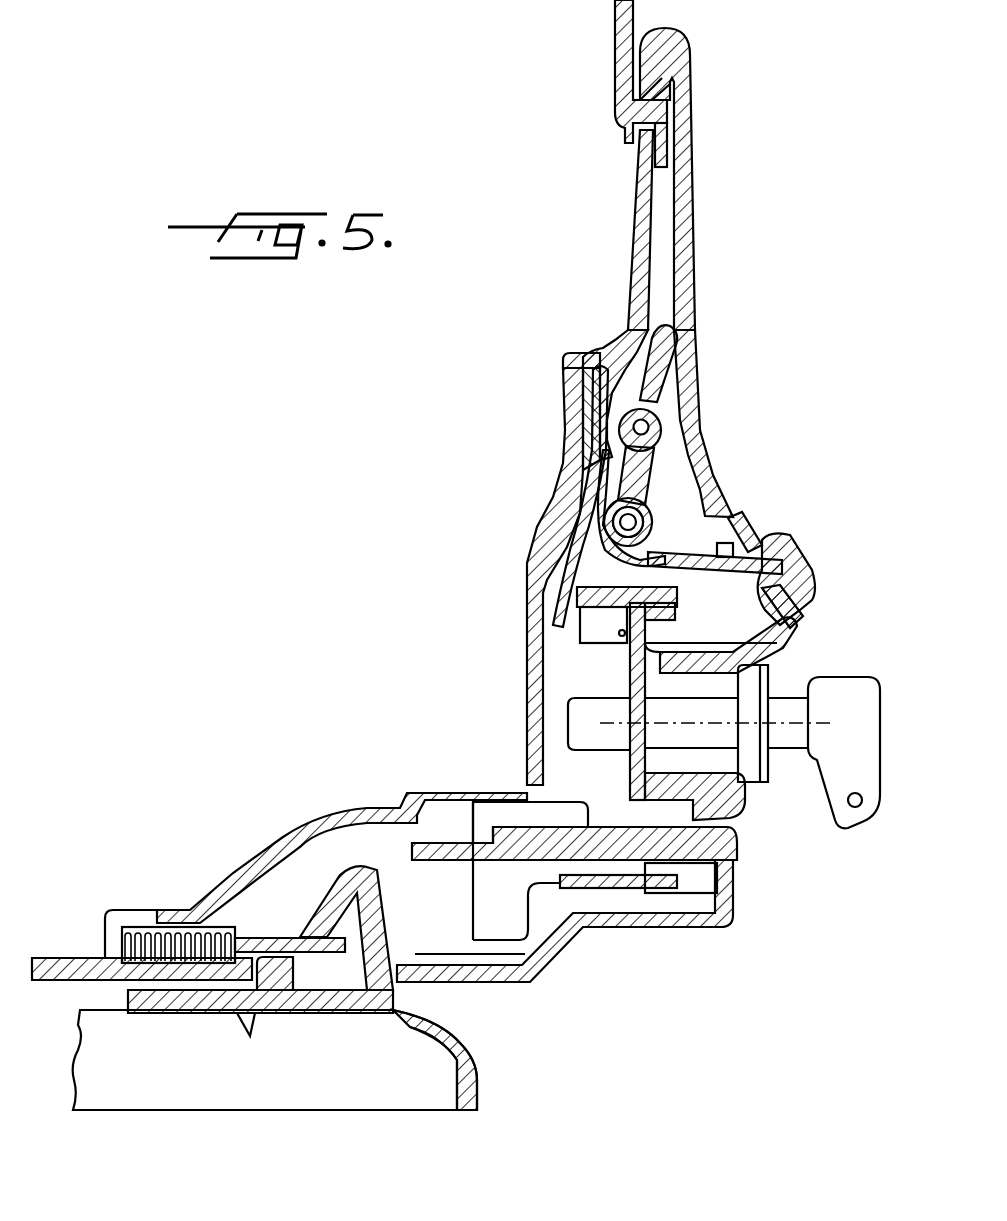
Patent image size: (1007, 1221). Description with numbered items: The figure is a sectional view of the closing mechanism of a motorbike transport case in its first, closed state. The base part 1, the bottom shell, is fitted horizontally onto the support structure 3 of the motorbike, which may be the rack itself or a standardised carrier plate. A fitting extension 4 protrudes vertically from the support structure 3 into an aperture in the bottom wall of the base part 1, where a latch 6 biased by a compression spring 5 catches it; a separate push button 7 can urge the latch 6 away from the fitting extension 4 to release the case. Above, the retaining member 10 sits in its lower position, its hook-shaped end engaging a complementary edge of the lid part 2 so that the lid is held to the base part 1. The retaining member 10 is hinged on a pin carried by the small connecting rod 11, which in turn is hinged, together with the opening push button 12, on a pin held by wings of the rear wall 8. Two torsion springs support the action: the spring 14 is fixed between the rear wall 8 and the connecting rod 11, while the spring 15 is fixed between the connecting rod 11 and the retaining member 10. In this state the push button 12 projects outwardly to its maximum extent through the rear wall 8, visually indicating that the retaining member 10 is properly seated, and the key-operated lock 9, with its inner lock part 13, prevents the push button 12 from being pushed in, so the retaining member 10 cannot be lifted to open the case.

The base part 1 is at (70, 955).
The lid part 2 is at (615, 45).
The support structure 3 is at (478, 1072).
The fitting extension 4 is at (333, 890).
The compression spring 5 is at (157, 938).
The latch 6 is at (617, 892).
The push button 7 is at (735, 882).
The rear wall 8 is at (786, 650).
The lock 9 is at (873, 790).
The retaining member 10 is at (693, 195).
The connecting rod 11 is at (566, 586).
The push button 12 is at (790, 557).
The inner lock part 13 is at (618, 663).
The torsion spring 14 is at (697, 500).
The torsion spring 15 is at (690, 432).